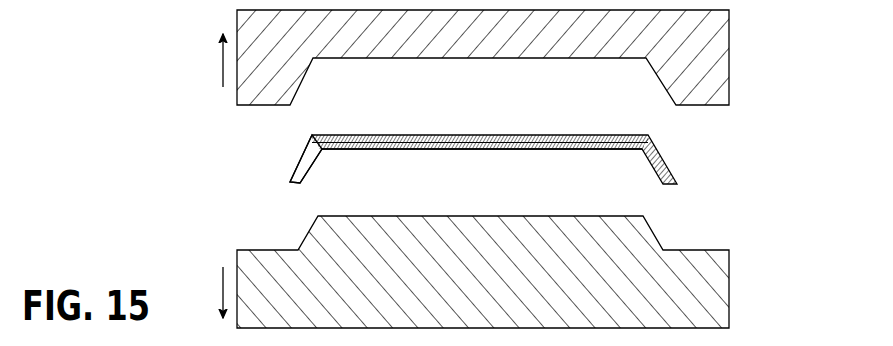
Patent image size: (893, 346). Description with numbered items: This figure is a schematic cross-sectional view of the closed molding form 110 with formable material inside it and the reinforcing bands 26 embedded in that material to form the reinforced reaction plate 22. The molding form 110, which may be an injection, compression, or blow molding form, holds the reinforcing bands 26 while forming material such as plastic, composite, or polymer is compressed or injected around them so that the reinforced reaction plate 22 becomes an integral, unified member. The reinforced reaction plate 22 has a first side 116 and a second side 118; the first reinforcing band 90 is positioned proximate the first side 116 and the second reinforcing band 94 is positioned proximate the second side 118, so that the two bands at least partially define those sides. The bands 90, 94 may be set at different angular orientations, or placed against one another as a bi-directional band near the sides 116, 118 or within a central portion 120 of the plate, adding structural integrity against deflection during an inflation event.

The molding form 110 is at (191, 154).
The reinforced reaction plate 22 is at (492, 155).
The reinforcing band 26 is at (625, 136).
The second reinforcing band 94 is at (340, 135).
The central portion 120 is at (443, 137).
The first side 116 is at (467, 136).
The second side 118 is at (348, 150).
The first reinforcing band 90 is at (480, 150).